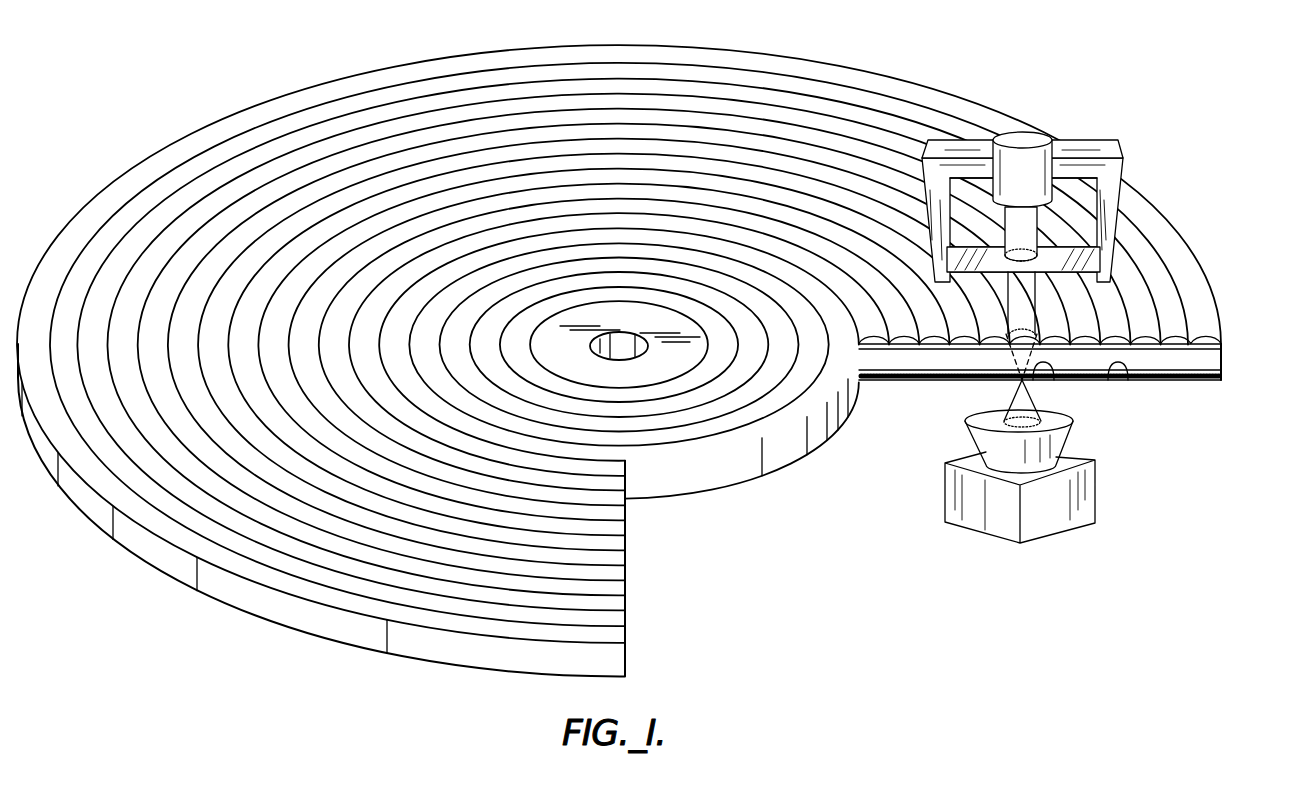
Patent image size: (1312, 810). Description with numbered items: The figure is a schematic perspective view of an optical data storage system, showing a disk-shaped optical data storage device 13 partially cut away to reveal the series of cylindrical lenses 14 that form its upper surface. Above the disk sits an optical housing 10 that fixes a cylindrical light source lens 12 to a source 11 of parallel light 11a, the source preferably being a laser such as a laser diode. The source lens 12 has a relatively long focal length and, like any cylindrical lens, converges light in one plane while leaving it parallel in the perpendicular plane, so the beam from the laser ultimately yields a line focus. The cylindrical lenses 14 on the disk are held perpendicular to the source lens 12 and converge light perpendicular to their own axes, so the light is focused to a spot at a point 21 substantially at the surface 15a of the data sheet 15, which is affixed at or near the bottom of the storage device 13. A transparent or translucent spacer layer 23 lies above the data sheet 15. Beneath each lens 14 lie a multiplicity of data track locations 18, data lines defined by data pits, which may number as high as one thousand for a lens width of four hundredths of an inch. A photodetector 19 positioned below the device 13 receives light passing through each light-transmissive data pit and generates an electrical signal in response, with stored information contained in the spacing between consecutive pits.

The optical housing 10 is at (1118, 168).
The source 11 is at (1032, 137).
The parallel light 11a is at (1032, 223).
The cylindrical light source lens 12 is at (1103, 288).
The optical data storage device 13 is at (1230, 354).
The cylindrical lenses 14 is at (1200, 323).
The data sheet 15 is at (1190, 380).
The surface 15a is at (1205, 367).
The data track locations 18 is at (1128, 380).
The photodetector 19 is at (1088, 499).
The point 21 is at (1054, 380).
The spacer layer 23 is at (968, 360).